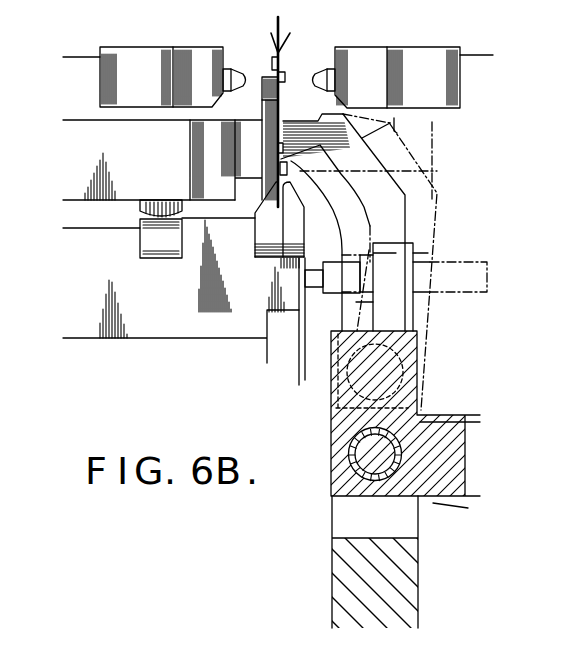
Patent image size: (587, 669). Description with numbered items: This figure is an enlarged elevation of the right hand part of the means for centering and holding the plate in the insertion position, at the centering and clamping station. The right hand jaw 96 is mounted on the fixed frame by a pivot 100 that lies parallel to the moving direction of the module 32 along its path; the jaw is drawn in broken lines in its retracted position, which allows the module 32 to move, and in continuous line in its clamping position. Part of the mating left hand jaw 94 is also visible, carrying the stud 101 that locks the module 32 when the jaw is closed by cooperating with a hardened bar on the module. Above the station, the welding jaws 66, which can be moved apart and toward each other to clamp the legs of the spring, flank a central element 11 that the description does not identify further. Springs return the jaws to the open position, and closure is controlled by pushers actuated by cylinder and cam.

The wire / rod 11 is at (282, 54).
The module 32 is at (157, 340).
The welding jaws 66 is at (135, 71).
The left hand jaw 94 is at (258, 143).
The right hand jaw 96 is at (360, 162).
The pivot 100 is at (350, 465).
The stud 101 is at (160, 207).